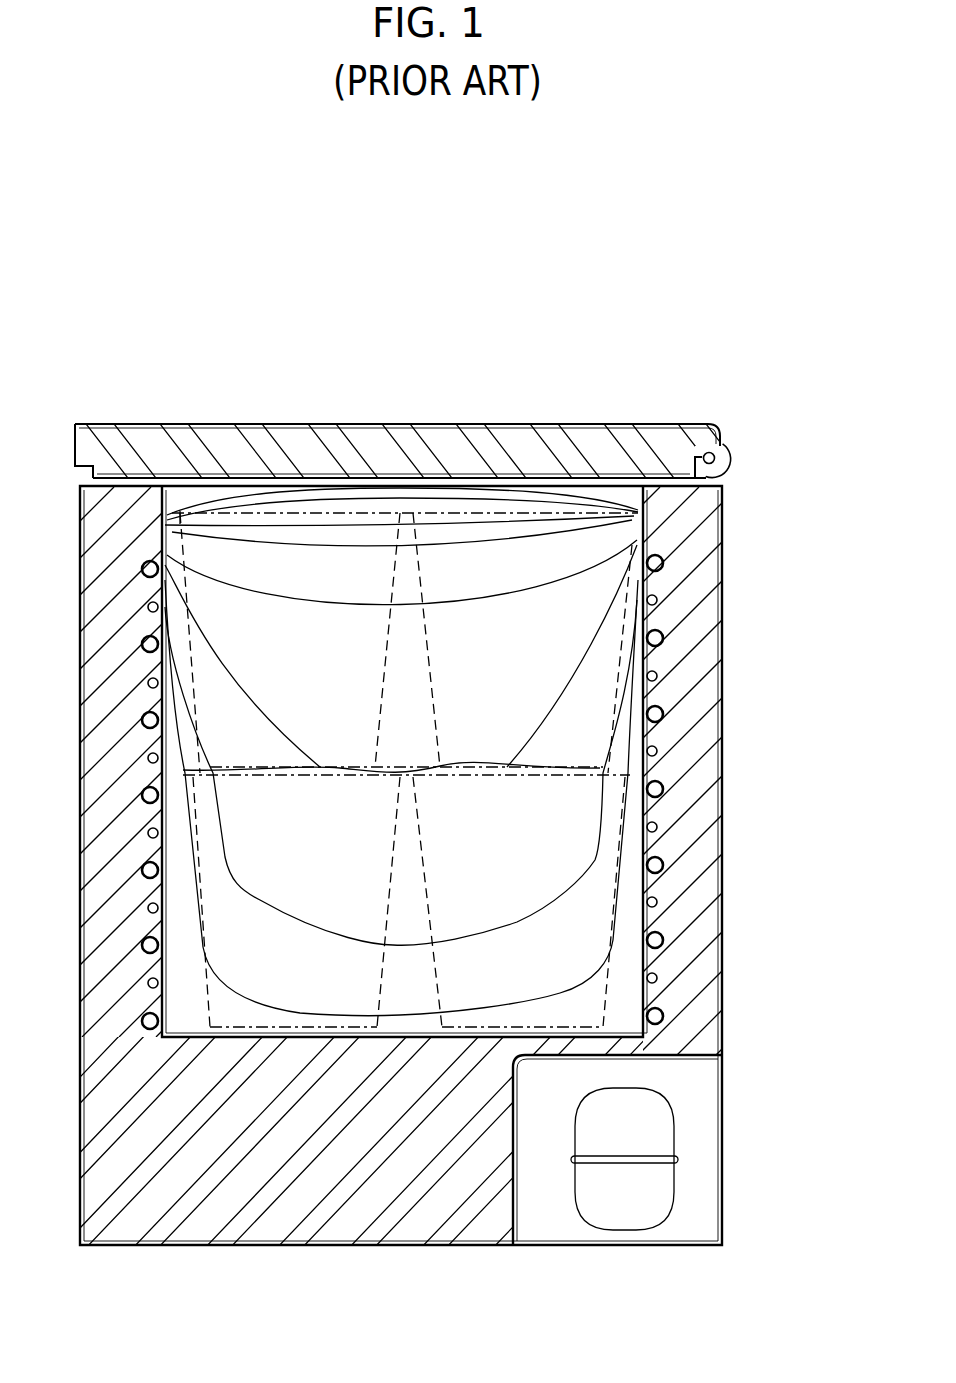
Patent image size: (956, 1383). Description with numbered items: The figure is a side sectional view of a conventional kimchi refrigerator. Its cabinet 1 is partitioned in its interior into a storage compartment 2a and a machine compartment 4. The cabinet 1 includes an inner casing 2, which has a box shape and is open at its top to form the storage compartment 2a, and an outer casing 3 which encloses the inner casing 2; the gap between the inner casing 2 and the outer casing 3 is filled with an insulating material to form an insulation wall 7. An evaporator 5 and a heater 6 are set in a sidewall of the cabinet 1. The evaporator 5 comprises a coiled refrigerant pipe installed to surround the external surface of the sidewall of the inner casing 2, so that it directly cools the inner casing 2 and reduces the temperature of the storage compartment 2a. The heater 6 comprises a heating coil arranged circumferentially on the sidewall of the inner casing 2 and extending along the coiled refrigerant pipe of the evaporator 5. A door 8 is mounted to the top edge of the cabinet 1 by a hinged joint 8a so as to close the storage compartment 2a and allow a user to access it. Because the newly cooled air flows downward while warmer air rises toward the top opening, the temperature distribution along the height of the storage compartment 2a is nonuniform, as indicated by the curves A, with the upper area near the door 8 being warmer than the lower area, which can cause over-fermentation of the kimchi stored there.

The cabinet 1 is at (478, 778).
The inner casing 2 is at (645, 693).
The storage compartment 2a is at (514, 843).
The outer casing 3 is at (722, 827).
The machine compartment 4 is at (716, 1167).
The evaporator 5 is at (663, 562).
The heater 6 is at (660, 603).
The insulation wall 7 is at (693, 973).
The door 8 is at (530, 393).
The hinged joint 8a is at (731, 460).
The curves A is at (312, 603).